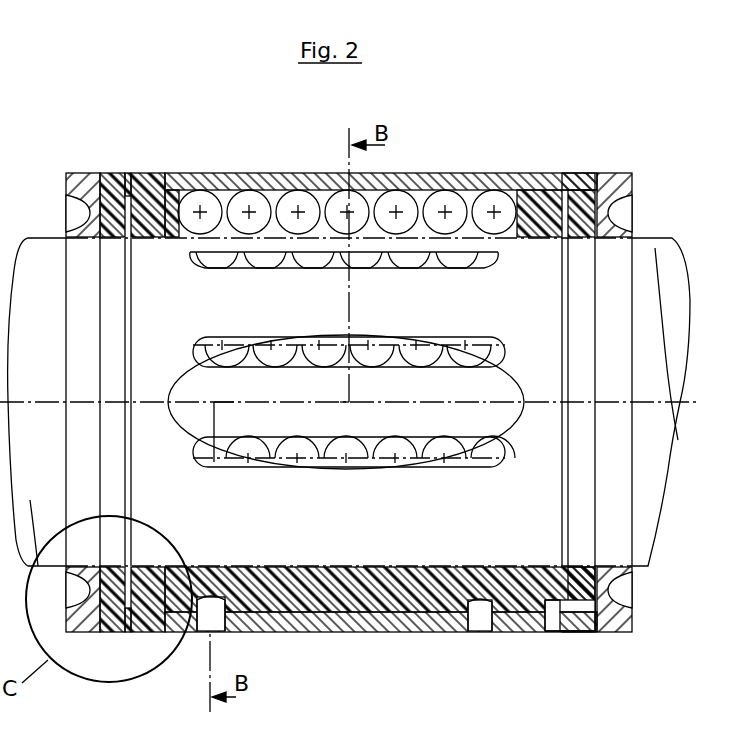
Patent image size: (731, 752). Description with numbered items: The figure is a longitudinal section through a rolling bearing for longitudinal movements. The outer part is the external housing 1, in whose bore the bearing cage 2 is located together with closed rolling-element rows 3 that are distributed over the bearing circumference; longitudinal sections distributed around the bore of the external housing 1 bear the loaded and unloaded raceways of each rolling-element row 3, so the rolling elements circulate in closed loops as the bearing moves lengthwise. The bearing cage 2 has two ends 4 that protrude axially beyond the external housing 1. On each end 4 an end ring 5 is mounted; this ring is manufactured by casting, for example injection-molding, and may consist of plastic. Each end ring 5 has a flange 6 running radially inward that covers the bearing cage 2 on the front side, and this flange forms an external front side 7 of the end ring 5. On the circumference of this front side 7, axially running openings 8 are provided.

The external housing 1 is at (372, 615).
The bearing cage 2 is at (452, 607).
The rolling-element rows 3 is at (312, 340).
The ends 4 is at (197, 187).
The end ring 5 is at (177, 195).
The flange 6 is at (119, 210).
The external front side 7 is at (609, 185).
The axially running openings 8 is at (565, 612).